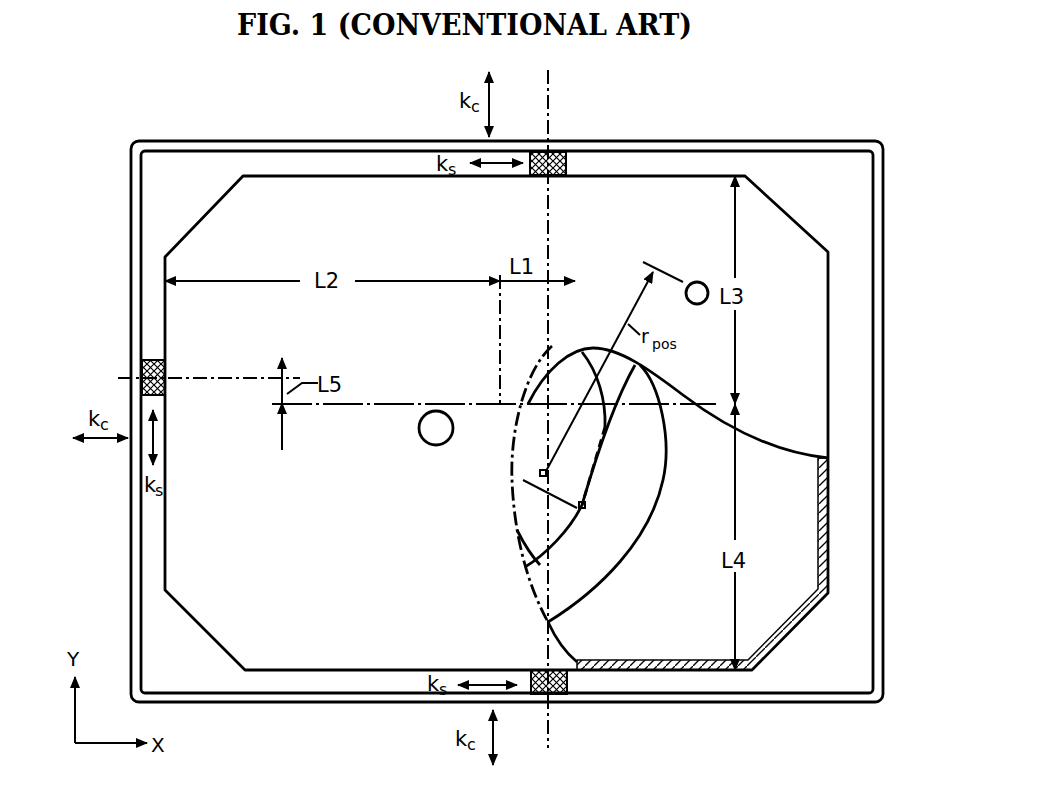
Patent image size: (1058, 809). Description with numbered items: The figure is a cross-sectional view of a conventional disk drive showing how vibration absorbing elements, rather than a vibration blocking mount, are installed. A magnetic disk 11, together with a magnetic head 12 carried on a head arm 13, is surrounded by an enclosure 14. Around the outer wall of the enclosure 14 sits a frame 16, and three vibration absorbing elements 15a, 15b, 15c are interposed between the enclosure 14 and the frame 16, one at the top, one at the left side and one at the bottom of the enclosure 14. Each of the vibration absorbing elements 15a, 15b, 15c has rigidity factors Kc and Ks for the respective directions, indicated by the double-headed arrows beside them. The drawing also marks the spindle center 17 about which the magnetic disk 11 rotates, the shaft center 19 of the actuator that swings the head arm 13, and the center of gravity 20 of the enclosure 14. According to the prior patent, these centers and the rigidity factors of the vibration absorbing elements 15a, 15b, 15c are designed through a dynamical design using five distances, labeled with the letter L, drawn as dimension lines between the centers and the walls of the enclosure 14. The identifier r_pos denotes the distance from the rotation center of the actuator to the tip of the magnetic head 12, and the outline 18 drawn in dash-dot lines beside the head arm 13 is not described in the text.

The magnetic disk 11 is at (592, 578).
The magnetic head 12 is at (582, 505).
The head arm 13 is at (617, 463).
The enclosure 14 is at (232, 217).
The vibration absorbing element 15a is at (557, 152).
The vibration absorbing element 15b is at (142, 368).
The vibration absorbing element 15c is at (536, 696).
The frame 16 is at (838, 143).
The spindle center 17 is at (436, 410).
The lens outline at rotated position 18 is at (517, 530).
The shaft center of the actuator 19 is at (697, 281).
The center of gravity 20 is at (502, 406).